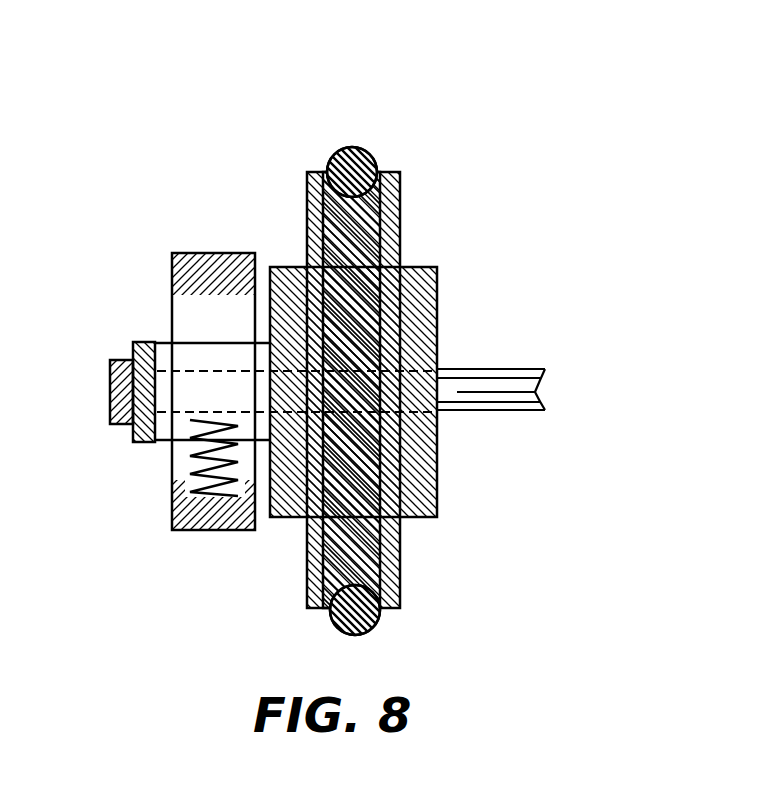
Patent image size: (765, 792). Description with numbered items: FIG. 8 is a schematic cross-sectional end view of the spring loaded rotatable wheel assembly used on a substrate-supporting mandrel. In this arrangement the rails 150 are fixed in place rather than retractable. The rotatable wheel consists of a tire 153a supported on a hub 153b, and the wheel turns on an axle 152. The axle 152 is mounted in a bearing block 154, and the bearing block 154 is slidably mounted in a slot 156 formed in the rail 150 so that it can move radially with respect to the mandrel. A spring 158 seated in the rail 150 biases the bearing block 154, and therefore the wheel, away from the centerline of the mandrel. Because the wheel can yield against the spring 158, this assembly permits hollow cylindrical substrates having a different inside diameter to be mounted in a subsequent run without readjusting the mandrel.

The rail 150 is at (210, 253).
The axle 152 is at (122, 358).
The tire 153a is at (368, 151).
The hub 153b is at (403, 224).
The bearing block 154 is at (163, 341).
The slot 156 is at (187, 320).
The spring 158 is at (188, 468).